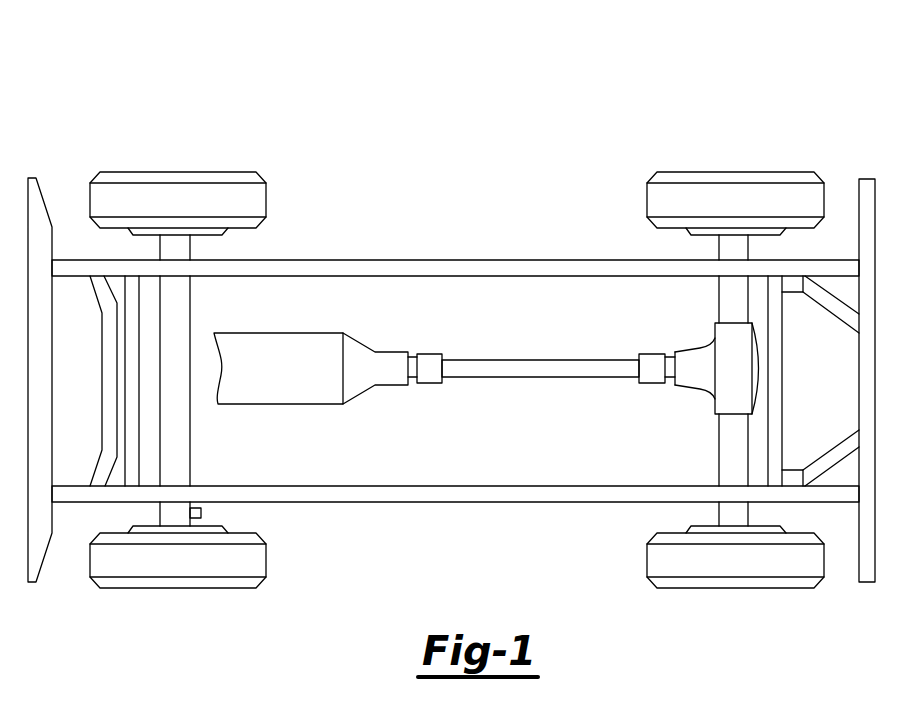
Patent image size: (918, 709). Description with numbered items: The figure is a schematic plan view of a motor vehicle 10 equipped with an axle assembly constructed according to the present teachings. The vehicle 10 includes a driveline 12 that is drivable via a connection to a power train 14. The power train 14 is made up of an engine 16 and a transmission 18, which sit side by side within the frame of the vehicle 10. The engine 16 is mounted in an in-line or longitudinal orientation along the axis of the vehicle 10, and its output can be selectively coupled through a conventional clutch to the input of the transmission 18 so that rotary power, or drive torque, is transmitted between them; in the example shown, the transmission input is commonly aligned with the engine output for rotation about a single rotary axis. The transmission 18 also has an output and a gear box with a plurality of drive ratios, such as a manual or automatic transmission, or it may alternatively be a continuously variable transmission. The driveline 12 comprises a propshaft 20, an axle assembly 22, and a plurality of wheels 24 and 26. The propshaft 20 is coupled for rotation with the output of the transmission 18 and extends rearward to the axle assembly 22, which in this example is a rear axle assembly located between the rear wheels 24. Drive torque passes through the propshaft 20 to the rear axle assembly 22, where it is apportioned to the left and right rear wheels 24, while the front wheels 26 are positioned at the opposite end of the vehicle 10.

The vehicle 10 is at (549, 121).
The driveline 12 is at (665, 340).
The power train 14 is at (304, 416).
The engine 16 is at (290, 382).
The transmission 18 is at (389, 362).
The propshaft 20 is at (533, 360).
The axle assembly 22 is at (685, 408).
The rear wheels 24 is at (702, 173).
The wheels 26 is at (166, 177).